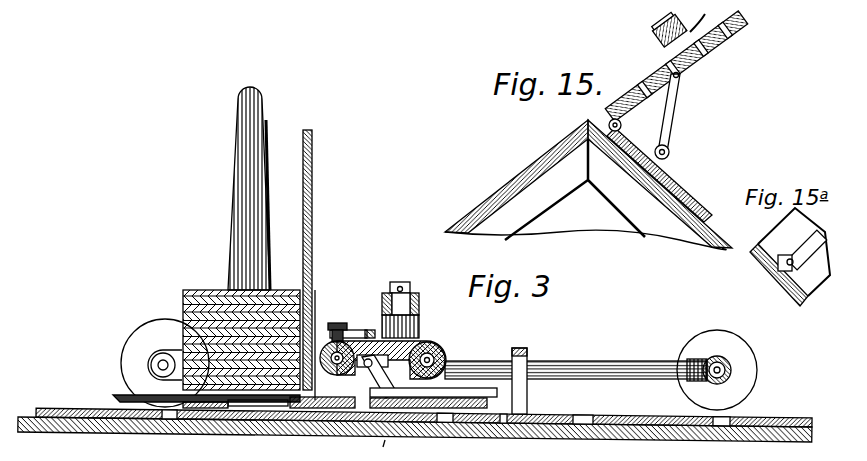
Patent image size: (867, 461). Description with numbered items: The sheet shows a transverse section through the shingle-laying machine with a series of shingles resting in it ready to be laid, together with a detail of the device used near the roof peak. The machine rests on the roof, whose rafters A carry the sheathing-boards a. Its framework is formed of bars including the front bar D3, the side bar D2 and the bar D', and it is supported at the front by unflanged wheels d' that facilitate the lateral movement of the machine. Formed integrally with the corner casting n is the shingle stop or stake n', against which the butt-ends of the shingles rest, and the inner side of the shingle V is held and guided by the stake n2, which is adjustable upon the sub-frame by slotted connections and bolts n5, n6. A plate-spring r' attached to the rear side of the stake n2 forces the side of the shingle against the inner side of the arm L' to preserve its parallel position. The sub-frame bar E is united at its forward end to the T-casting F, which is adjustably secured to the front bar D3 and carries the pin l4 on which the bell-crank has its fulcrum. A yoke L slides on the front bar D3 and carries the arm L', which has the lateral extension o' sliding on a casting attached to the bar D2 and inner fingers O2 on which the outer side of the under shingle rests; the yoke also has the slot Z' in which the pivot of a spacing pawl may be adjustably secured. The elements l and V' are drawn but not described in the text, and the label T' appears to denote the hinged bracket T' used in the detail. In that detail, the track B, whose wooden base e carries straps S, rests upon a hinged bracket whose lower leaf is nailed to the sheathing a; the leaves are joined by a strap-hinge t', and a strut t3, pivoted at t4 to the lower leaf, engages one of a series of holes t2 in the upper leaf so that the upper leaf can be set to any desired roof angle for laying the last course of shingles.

In FIG. 3, the sheathing-boards a is at (415, 434).
In FIG. 15, the sheathing-boards a is at (588, 185).
In FIG. 3, the shingle stop or stake n' is at (236, 188).
In FIG. 3, the shingle V is at (241, 328).
In FIG. 3, the stake n2 is at (322, 265).
In FIG. 3, the unflanged wheels d' is at (165, 351).
In FIG. 3, the side bar D2 is at (148, 367).
In FIG. 3, the corner casting n is at (165, 354).
In FIG. 3, the lateral extension o' is at (191, 388).
In FIG. 3, the arm L' is at (205, 431).
In FIG. 3, the inner fingers O2 is at (240, 433).
In FIG. 3, the plate-spring r' is at (346, 302).
In FIG. 3, the bolt n6 is at (350, 312).
In FIG. 3, the bolt n5 is at (358, 323).
In FIG. 3, the pin l4 is at (403, 301).
In FIG. 3, the T-casting F is at (418, 342).
In FIG. 3, the sub-frame bar E is at (443, 349).
In FIG. 3, the link l is at (376, 377).
In FIG. 3, the front bar D3 is at (576, 360).
In FIG. 3, the yoke L is at (527, 381).
In FIG. 3, the slot Z' is at (448, 424).
In FIG. 3, the plate V' is at (373, 450).
In FIG. 3, the frame bar D' is at (729, 370).
In FIG. 15, the rafters A is at (582, 189).
In FIG. 15, the track T' is at (667, 165).
In FIG. 15, the straps S is at (648, 72).
In FIG. 15, the strap-hinge t' is at (626, 119).
In FIG. 15, the strut t3 is at (672, 110).
In FIG. 15A, the strut t3 is at (794, 252).
In FIG. 15, the pivot t4 is at (678, 146).
In FIG. 15A, the pivot t4 is at (779, 269).
In FIG. 15, the track B is at (660, 38).
In FIG. 15, the wooden base e is at (662, 52).
In FIG. 15, the holes t2 is at (727, 40).